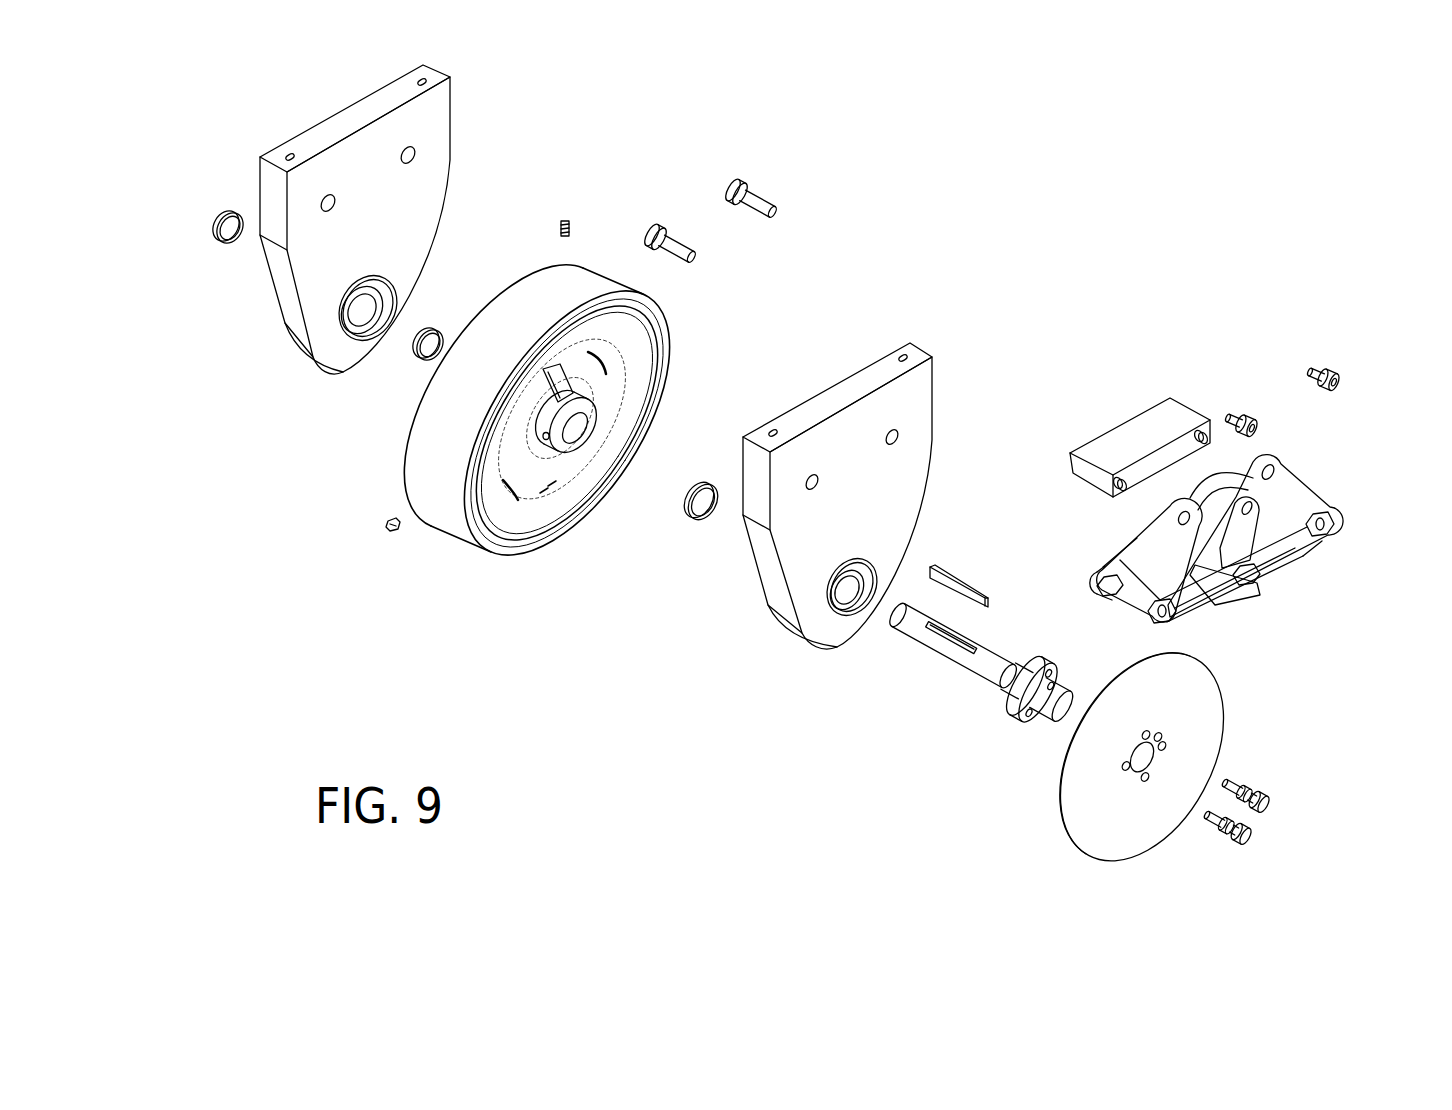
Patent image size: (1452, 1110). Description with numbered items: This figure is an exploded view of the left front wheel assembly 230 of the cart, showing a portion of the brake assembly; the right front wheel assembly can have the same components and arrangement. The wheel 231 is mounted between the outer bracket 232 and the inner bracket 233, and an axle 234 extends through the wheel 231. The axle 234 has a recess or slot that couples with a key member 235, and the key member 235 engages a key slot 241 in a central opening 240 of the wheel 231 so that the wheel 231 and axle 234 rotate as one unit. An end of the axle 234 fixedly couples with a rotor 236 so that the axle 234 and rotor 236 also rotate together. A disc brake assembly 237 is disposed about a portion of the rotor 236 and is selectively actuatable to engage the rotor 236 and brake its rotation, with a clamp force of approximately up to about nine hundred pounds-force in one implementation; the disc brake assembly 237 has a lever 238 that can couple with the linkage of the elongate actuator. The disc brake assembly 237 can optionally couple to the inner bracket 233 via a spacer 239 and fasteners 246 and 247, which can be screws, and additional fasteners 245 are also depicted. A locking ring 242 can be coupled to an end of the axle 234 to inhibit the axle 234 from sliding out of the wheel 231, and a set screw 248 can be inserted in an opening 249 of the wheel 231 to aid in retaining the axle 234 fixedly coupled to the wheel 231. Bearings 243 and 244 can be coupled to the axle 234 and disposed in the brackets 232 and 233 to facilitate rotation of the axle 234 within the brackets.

The front wheel assembly 230 is at (1140, 205).
The wheel 231 is at (528, 462).
The outer bracket 232 is at (448, 112).
The inner bracket 233 is at (934, 338).
The axle 234 is at (918, 650).
The key member 235 is at (960, 553).
The rotor 236 is at (1240, 713).
The disc brake assembly 237 is at (1327, 472).
The lever 238 is at (1285, 544).
The spacer 239 is at (1110, 447).
The central opening 240 is at (588, 426).
The key slot 241 is at (583, 430).
The locking ring 242 is at (204, 261).
The bearing 243 is at (404, 371).
The bearing 244 is at (700, 525).
The fasteners 245 is at (1272, 836).
The fasteners 246 is at (1340, 352).
The fasteners 247 is at (783, 174).
The set screw 248 is at (367, 521).
The opening 249 is at (547, 440).